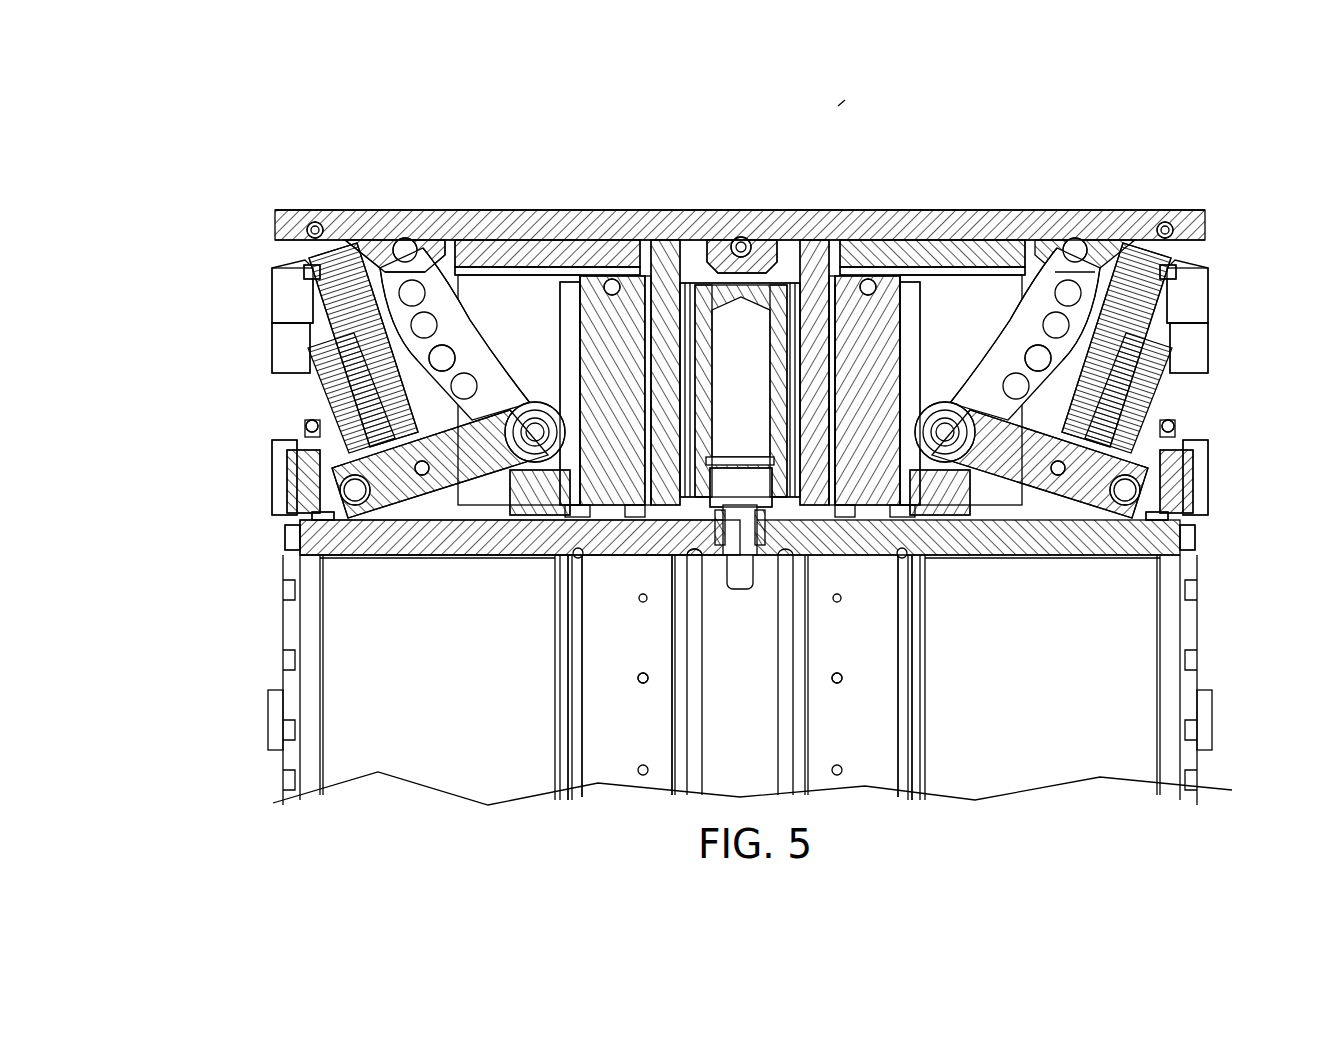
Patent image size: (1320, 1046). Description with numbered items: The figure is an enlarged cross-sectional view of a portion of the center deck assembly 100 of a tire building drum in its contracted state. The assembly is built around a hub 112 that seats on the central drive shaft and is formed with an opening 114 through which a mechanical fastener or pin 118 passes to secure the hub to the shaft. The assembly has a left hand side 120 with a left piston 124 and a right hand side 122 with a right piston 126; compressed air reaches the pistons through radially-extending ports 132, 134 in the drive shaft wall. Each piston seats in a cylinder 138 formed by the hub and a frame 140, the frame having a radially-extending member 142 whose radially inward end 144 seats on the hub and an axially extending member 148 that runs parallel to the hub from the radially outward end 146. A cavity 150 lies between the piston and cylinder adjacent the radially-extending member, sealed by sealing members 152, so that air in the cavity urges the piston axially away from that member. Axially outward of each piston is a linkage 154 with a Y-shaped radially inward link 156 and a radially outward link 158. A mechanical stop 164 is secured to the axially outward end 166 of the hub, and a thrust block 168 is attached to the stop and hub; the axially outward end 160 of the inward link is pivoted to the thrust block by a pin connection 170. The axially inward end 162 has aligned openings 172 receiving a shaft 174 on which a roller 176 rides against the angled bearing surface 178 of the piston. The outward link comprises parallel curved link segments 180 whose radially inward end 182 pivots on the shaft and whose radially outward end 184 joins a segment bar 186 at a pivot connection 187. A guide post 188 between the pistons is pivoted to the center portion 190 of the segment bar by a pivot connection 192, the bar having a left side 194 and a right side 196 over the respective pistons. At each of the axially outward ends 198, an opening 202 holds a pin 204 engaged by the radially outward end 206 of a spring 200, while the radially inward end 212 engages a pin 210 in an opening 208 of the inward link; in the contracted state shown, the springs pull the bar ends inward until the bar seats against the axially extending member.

The center deck assembly 100 is at (845, 100).
The hub 112 is at (300, 556).
The opening 114 is at (700, 548).
The mechanical fastener or pin 118 is at (748, 588).
The left hand side 120 is at (482, 207).
The right hand side 122 is at (1012, 208).
The left piston 124 is at (640, 207).
The right piston 126 is at (868, 350).
The radially-extending port 132 is at (643, 690).
The radially-extending port 134 is at (838, 690).
The cylinder 138 is at (485, 238).
The frame 140 is at (690, 262).
The radially-extending member 142 is at (718, 300).
The radially inward end 144 is at (600, 510).
The radially outward end 146 is at (666, 330).
The axially extending member 148 is at (538, 252).
The cavity 150 is at (632, 300).
The sealing members 152 is at (613, 280).
The linkage 154 is at (480, 352).
The radially inward link 156 is at (362, 522).
The radially outward link 158 is at (462, 333).
The axially outward end 160 is at (330, 535).
The axially inward end 162 is at (422, 480).
The mechanical stop 164 is at (342, 487).
The axially outward end 166 is at (288, 543).
The thrust block 168 is at (300, 497).
The pin connection 170 is at (310, 432).
The aligned openings 172 is at (543, 407).
The shaft 174 is at (425, 500).
The roller 176 is at (566, 522).
The bearing surface 178 is at (568, 337).
The link segments 180 is at (335, 270).
The radially inward end 182 is at (335, 485).
The radially outward end 184 is at (388, 280).
The segment bar 186 is at (372, 258).
The pivot connection 187 is at (418, 270).
The guide post 188 is at (660, 480).
The center portion 190 is at (743, 238).
The pivot connection 192 is at (792, 300).
The left side 194 is at (407, 240).
The right side 196 is at (1088, 262).
The axially outward ends 198 is at (278, 214).
The springs 200 is at (300, 300).
The opening 202 is at (300, 236).
The pin 204 is at (310, 224).
The radially outward end 206 is at (304, 272).
The opening 208 is at (325, 530).
The pin 210 is at (422, 478).
The radially inward end 212 is at (350, 398).